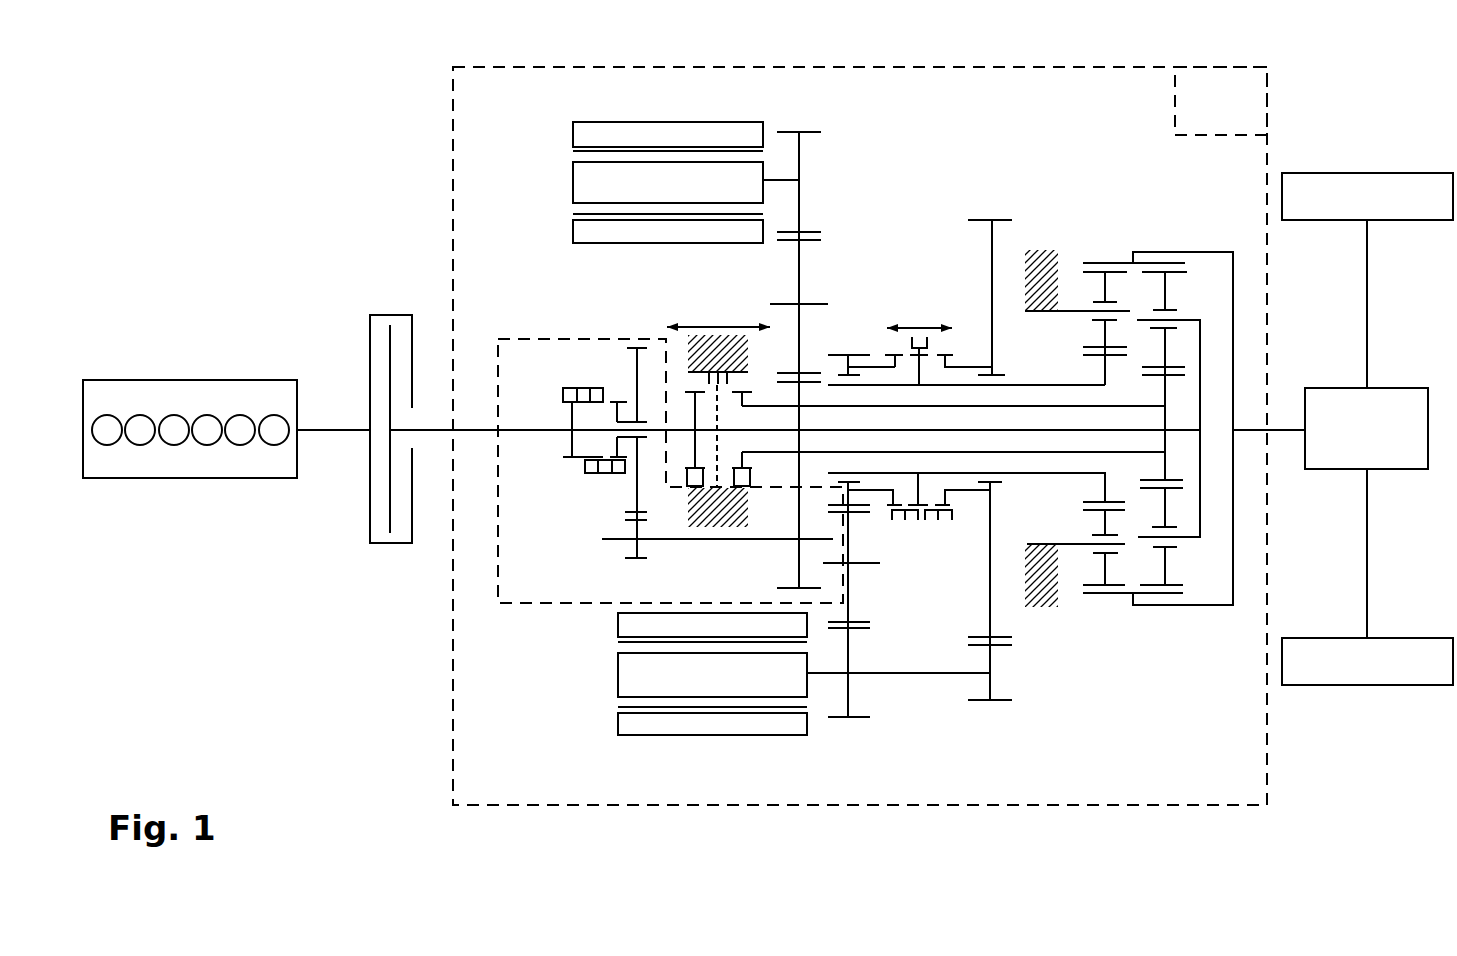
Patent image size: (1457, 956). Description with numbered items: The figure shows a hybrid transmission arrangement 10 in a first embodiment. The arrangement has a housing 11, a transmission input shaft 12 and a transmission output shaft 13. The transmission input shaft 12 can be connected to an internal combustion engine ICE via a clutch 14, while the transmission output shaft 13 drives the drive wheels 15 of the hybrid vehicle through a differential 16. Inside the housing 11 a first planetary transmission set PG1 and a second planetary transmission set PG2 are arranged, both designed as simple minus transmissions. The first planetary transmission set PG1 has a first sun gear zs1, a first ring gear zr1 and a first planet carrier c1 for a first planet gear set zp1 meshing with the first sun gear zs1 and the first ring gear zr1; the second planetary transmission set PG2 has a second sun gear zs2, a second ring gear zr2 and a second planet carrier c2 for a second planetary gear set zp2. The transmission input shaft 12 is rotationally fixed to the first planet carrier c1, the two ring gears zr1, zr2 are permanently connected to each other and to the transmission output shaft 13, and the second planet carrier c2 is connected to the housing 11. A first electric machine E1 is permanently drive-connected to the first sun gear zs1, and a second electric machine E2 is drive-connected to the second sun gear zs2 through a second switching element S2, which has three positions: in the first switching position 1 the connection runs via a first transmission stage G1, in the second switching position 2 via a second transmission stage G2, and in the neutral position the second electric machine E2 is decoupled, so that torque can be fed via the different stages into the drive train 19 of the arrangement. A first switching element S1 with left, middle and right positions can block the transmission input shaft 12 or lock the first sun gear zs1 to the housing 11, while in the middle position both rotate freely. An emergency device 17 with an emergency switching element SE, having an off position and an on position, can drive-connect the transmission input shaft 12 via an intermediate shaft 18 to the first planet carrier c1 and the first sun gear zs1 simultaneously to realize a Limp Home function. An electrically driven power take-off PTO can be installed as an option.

The transmission arrangement 10 is at (445, 86).
The housing 11 is at (1040, 250).
The transmission input shaft 12 is at (478, 432).
The transmission output shaft 13 is at (1285, 430).
The clutch 14 is at (390, 315).
The drive wheels 15 is at (1352, 676).
The differential 16 is at (1352, 443).
The emergency device 17 is at (542, 334).
The intermediate shaft 18 is at (717, 541).
The drive train 19 is at (1033, 481).
The internal combustion engine ICE is at (215, 380).
The first electric machine E1 is at (700, 355).
The second electric machine E2 is at (804, 674).
The first switching element S1 is at (698, 308).
The second switching element S2 is at (901, 294).
The emergency switching element SE is at (577, 482).
The power take-off PTO is at (1196, 119).
The first planetary transmission set PG1 is at (1040, 377).
The second planetary transmission set PG2 is at (1072, 257).
The first planet gear set zp1 is at (1163, 290).
The second planetary gear set zp2 is at (1100, 287).
The first ring gear zr1 is at (1163, 250).
The second ring gear zr2 is at (1120, 250).
The first sun gear zs1 is at (1167, 380).
The second sun gear zs2 is at (1098, 369).
The first planet carrier c1 is at (1200, 327).
The second planet carrier c2 is at (1077, 314).
The first transmission stage G1 is at (999, 719).
The second transmission stage G2 is at (854, 727).
The first switching position 1 is at (957, 523).
The second switching position 2 is at (883, 523).